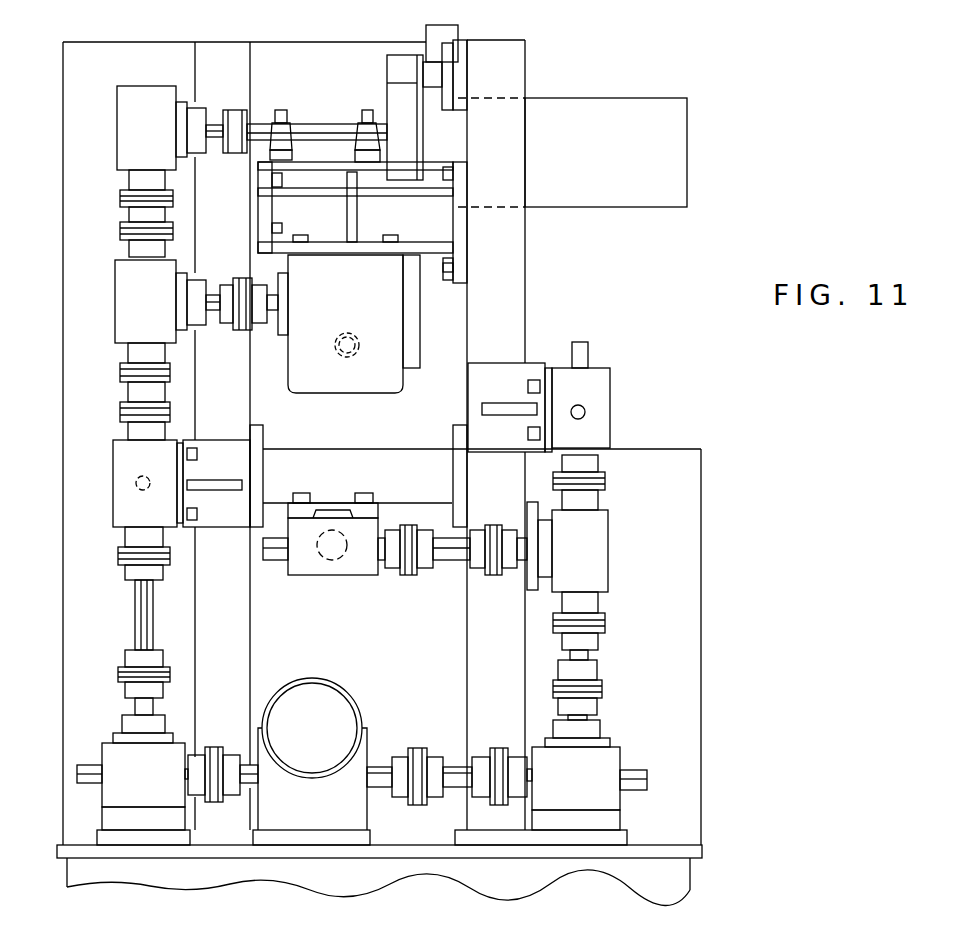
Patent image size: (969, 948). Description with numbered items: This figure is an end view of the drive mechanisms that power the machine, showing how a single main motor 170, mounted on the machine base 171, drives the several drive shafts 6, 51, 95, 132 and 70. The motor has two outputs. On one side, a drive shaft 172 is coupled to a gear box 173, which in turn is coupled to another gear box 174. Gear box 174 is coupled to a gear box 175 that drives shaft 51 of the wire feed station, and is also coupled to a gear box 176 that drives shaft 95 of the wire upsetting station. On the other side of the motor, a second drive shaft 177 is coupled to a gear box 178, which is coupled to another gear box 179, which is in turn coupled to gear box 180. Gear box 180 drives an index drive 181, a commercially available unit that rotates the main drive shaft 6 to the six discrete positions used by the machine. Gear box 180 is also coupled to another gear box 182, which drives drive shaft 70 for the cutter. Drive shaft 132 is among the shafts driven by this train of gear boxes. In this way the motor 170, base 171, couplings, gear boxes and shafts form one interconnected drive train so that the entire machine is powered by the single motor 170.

The gear box 182 is at (150, 86).
The drive shaft 70 is at (338, 124).
The gear box 180 is at (115, 291).
The index drive 181 is at (405, 385).
The main drive shaft 6 is at (343, 358).
The gear box 175 is at (610, 377).
The shaft 51 is at (585, 412).
The gear box 179 is at (113, 462).
The drive shaft 132 is at (137, 488).
The gear box 174 is at (608, 547).
The gear box 176 is at (313, 575).
The shaft 95 is at (347, 550).
The main motor 170 is at (341, 689).
The drive shaft 172 is at (378, 767).
The gear box 173 is at (622, 757).
The gear box 178 is at (138, 807).
The second drive shaft 177 is at (250, 793).
The machine base 171 is at (288, 880).